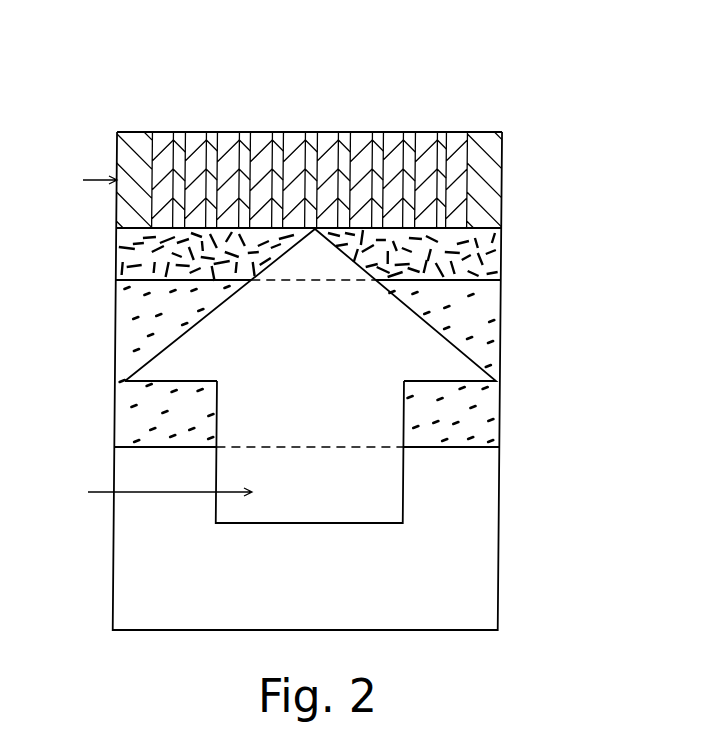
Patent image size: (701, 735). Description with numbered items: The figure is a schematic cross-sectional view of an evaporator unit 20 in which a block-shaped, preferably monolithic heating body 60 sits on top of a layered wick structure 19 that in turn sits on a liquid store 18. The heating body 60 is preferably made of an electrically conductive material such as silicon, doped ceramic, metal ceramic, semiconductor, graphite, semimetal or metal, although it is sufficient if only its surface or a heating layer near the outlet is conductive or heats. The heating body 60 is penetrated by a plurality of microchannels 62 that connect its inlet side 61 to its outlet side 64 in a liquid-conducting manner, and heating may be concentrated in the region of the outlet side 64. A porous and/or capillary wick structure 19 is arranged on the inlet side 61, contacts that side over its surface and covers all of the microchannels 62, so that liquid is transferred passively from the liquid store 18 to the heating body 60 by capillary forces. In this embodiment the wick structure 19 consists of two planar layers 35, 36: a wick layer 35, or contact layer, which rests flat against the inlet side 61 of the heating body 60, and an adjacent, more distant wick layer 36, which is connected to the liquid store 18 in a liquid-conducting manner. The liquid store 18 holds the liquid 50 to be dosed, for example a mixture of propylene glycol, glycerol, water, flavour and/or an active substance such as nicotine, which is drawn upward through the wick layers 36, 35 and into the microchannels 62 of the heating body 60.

The liquid store 18 is at (307, 381).
The wick structure 19 is at (354, 338).
The evaporator unit 20 is at (525, 318).
The wick layer 35 is at (386, 266).
The wick layer 36 is at (512, 282).
The liquid 50 is at (321, 506).
The heating body 60 is at (339, 139).
The inlet side 61 is at (427, 232).
The microchannels 62 is at (312, 132).
The outlet side 64 is at (390, 132).